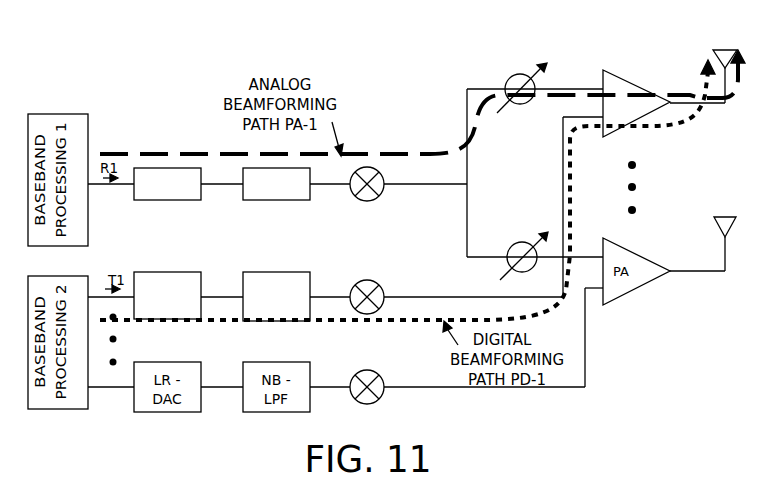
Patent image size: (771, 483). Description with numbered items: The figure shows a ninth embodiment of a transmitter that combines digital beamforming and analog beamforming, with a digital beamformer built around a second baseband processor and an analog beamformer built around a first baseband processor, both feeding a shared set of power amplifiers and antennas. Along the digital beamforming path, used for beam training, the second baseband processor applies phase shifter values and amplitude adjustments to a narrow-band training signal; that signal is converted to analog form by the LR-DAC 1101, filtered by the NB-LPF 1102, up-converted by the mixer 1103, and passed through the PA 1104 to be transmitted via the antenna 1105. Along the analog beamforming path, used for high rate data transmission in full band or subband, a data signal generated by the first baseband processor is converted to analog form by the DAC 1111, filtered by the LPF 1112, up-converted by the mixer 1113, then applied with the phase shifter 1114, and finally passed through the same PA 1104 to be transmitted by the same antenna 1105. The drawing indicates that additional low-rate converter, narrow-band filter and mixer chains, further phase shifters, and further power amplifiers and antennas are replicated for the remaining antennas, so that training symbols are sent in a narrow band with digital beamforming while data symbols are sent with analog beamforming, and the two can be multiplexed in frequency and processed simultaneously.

The LR-DAC 1101 is at (194, 273).
The NB-LPF 1102 is at (295, 273).
The mixer 1103 is at (367, 280).
The PA 1104 is at (627, 81).
The antenna 1105 is at (720, 49).
The DAC 1111 is at (154, 200).
The LPF 1112 is at (262, 200).
The mixer 1113 is at (367, 201).
The phase shifter 1114 is at (520, 104).